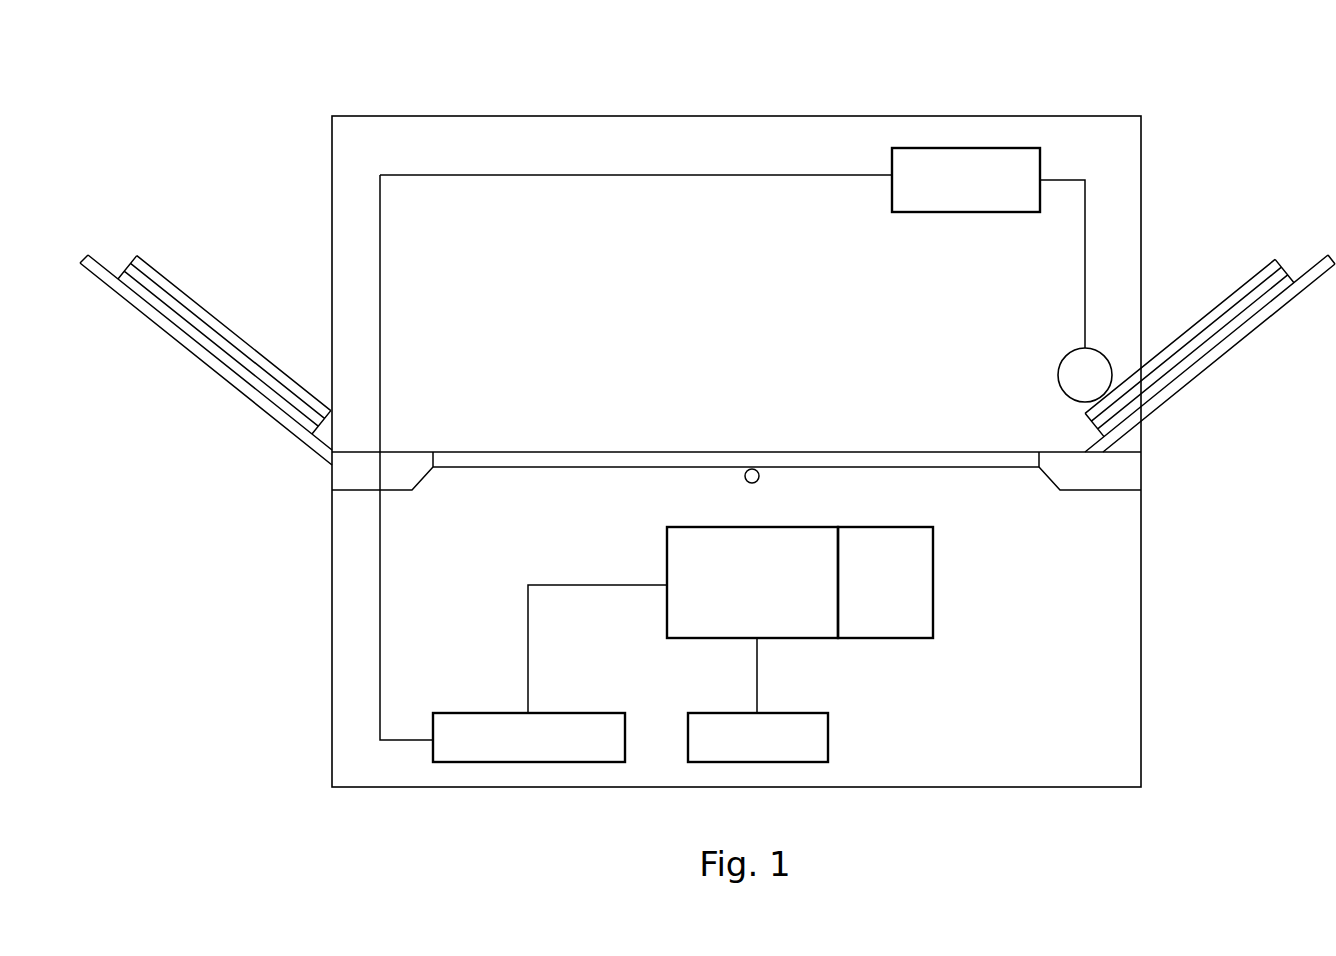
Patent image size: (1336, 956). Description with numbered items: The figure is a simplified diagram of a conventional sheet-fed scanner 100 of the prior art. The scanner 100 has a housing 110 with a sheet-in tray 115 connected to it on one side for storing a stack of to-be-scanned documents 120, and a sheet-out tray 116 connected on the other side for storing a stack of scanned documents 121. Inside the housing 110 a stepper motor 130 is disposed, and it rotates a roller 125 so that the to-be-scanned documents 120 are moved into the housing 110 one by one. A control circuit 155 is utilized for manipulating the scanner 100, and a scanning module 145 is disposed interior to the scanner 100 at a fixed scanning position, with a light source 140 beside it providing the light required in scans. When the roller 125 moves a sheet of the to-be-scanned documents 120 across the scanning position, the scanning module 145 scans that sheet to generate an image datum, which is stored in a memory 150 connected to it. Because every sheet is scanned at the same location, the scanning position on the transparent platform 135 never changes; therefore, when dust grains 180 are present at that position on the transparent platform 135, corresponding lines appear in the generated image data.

The sheet-fed scanner 100 is at (204, 124).
The housing 110 is at (367, 119).
The sheet-in tray 115 is at (1248, 336).
The sheet-out tray 116 is at (222, 378).
The to-be-scanned documents 120 is at (1222, 299).
The scanned documents 121 is at (220, 312).
The roller 125 is at (1095, 362).
The stepper motor 130 is at (932, 148).
The transparent platform 135 is at (853, 452).
The light source 140 is at (933, 563).
The scanning module 145 is at (667, 542).
The memory 150 is at (755, 762).
The control circuit 155 is at (531, 762).
The dust grains 180 is at (759, 478).